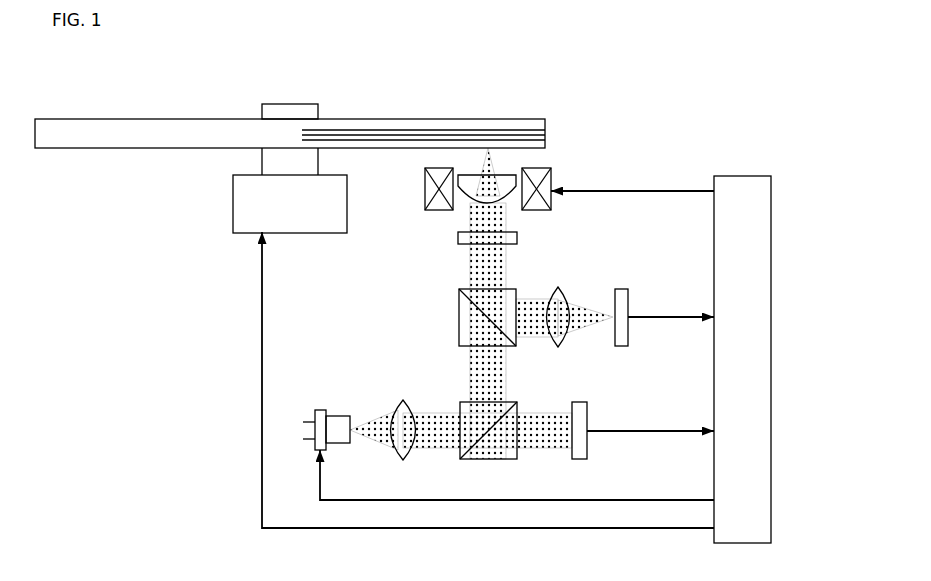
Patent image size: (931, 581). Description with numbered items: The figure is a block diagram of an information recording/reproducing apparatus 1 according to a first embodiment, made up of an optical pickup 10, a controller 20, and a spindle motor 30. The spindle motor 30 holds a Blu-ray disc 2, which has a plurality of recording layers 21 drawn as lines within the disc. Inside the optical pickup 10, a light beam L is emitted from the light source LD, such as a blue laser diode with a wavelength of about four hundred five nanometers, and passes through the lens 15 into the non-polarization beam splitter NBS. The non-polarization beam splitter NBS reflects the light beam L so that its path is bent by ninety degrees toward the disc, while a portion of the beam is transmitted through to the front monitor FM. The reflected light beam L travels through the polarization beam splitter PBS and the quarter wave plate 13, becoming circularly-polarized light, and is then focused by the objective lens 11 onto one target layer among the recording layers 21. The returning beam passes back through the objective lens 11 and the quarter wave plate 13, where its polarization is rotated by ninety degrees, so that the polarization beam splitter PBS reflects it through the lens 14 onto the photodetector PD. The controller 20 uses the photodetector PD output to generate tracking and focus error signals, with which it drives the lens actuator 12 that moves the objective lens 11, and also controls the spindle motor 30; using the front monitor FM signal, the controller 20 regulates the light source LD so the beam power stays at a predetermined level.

The information recording/reproducing apparatus 1 is at (604, 86).
The Blu-ray disc 2 is at (115, 126).
The recording layers 21 is at (375, 130).
The spindle motor 30 is at (232, 215).
The lens actuator 12 is at (543, 163).
The objective lens 11 is at (468, 205).
The quarter wave plate 13 is at (523, 237).
The lens 14 is at (563, 290).
The lens 15 is at (397, 402).
The optical pickup 10 is at (360, 317).
The controller 20 is at (772, 273).
The polarization beam splitter PBS is at (457, 314).
The non-polarization beam splitter NBS is at (500, 462).
The photodetector PD is at (624, 287).
The light source LD is at (328, 409).
The front monitor FM is at (580, 400).
The light beam L is at (450, 418).